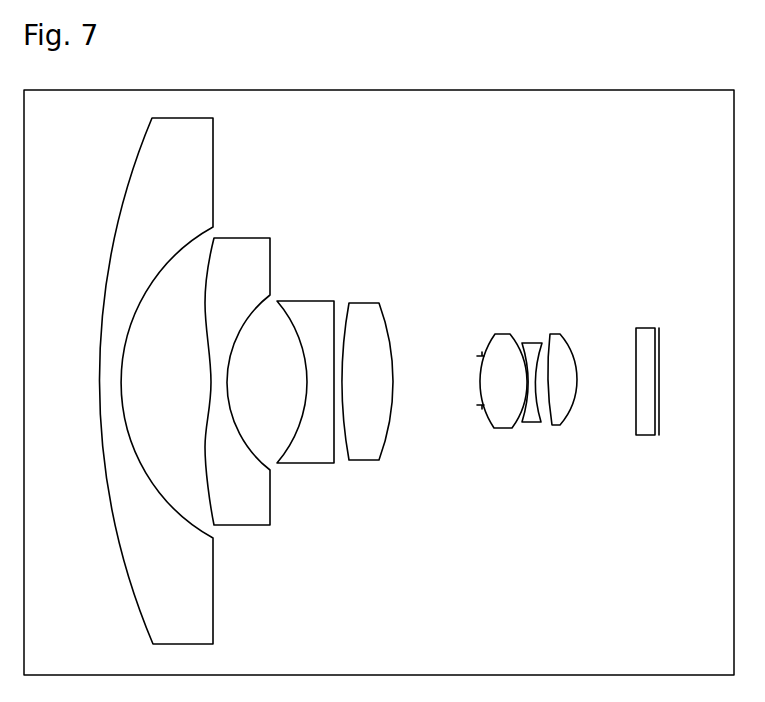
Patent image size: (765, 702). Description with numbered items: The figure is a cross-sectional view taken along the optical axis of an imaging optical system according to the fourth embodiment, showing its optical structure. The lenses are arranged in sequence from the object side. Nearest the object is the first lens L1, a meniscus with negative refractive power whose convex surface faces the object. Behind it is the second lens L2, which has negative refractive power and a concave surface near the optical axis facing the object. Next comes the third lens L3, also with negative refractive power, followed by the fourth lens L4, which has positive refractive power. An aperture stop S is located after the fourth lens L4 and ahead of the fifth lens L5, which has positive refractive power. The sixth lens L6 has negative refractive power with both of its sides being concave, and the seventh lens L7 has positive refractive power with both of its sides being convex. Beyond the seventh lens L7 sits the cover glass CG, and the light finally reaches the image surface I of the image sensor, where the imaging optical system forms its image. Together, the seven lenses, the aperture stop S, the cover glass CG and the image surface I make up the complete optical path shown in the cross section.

The first lens L1 is at (150, 603).
The second lens L2 is at (248, 515).
The third lens L3 is at (308, 455).
The fourth lens L4 is at (363, 450).
The aperture stop S is at (482, 405).
The fifth lens L5 is at (503, 430).
The sixth lens L6 is at (528, 425).
The seventh lens L7 is at (555, 430).
The cover glass CG is at (643, 435).
The image surface I is at (660, 410).